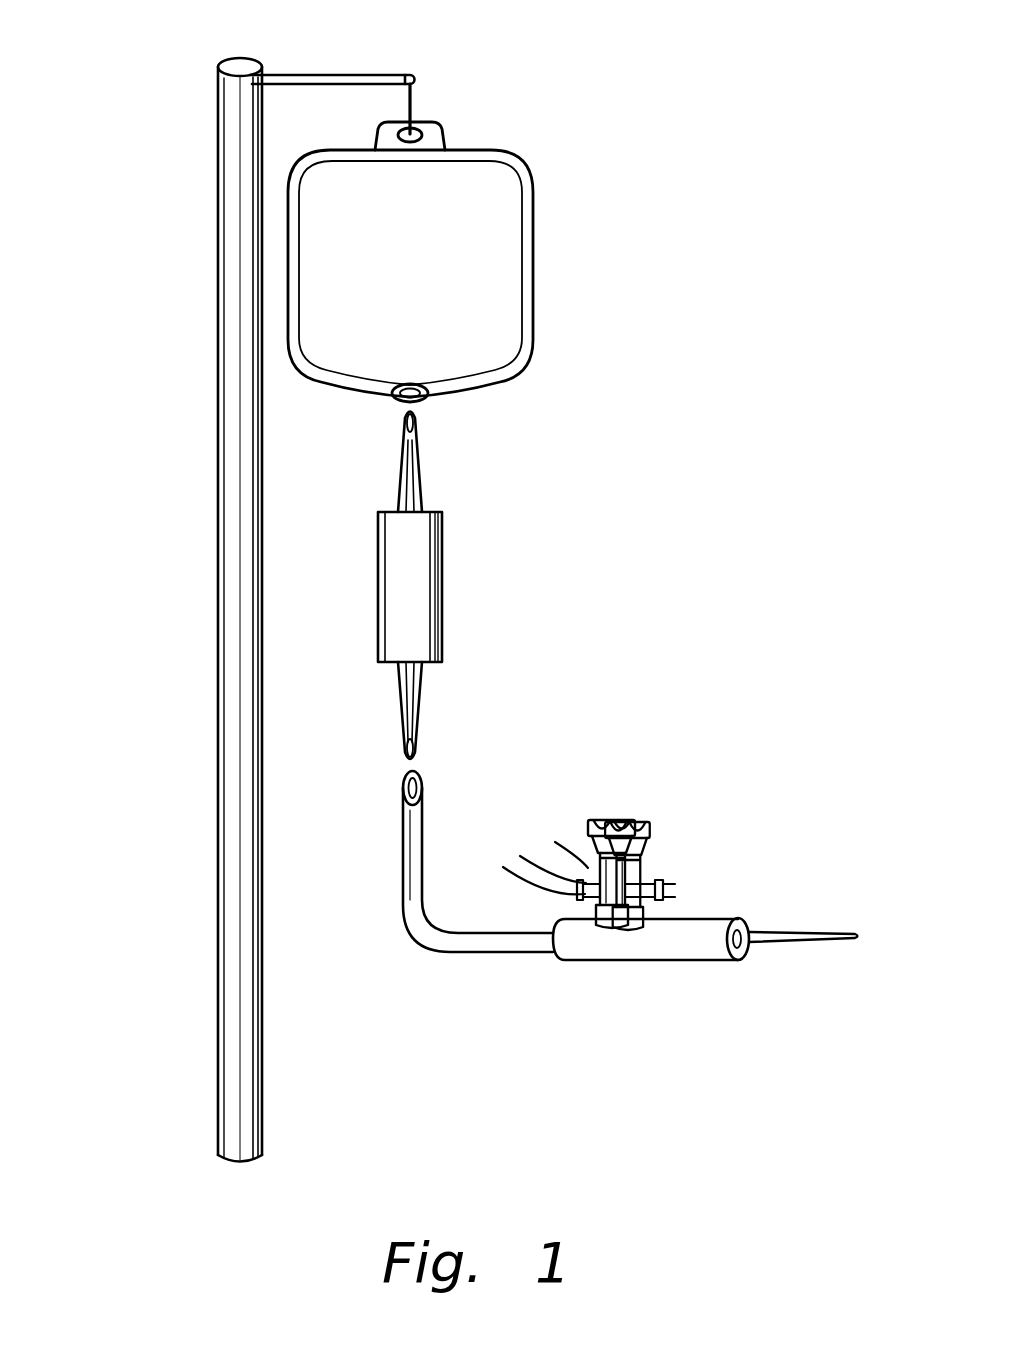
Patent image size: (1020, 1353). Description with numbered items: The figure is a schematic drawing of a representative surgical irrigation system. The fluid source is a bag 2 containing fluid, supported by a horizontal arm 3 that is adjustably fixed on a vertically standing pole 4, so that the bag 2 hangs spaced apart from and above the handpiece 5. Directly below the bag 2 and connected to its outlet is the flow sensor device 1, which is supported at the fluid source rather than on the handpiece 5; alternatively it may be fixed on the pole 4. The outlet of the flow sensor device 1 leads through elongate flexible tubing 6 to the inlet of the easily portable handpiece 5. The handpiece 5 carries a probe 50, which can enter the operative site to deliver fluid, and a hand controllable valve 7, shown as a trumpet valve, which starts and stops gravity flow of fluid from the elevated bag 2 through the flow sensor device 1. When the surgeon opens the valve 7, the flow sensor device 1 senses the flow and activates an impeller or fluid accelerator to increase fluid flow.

The flow sensor device 1 is at (442, 568).
The bag 2 is at (533, 238).
The horizontal arm 3 is at (358, 72).
The pole 4 is at (217, 378).
The handpiece 5 is at (723, 912).
The flexible tubing 6 is at (425, 846).
The hand controllable valve 7 is at (612, 820).
The probe 50 is at (793, 932).